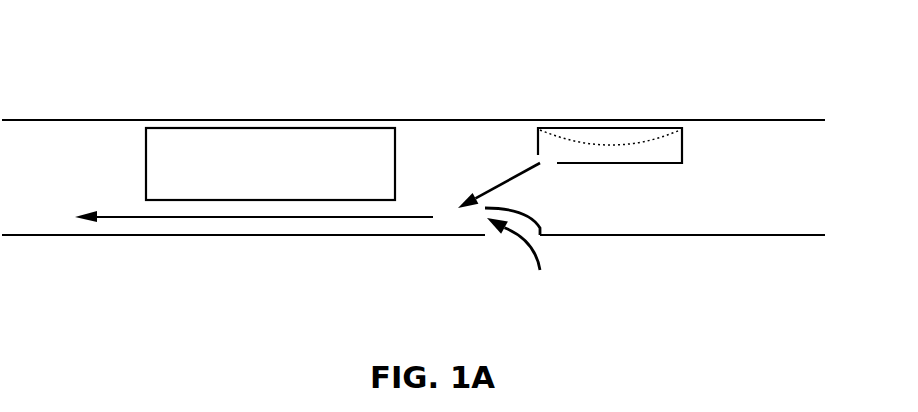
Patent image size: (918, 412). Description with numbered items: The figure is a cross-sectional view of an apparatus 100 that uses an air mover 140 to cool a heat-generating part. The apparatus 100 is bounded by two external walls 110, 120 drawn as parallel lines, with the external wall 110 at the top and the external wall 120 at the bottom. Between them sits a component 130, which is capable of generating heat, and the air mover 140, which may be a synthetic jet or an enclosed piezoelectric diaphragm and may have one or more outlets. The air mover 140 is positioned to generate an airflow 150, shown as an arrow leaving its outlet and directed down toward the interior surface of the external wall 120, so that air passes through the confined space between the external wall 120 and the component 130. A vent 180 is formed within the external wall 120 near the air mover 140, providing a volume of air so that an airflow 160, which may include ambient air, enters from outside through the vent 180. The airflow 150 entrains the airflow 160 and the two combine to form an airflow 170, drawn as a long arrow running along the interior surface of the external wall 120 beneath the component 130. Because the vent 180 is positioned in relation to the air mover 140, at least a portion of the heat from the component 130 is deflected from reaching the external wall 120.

The apparatus 100 is at (55, 40).
The external wall 110 is at (469, 119).
The external wall 120 is at (147, 235).
The component 130 is at (270, 164).
The air mover 140 is at (663, 155).
The airflow 150 is at (523, 175).
The airflow 160 is at (523, 264).
The airflow 170 is at (128, 217).
The vent 180 is at (495, 243).